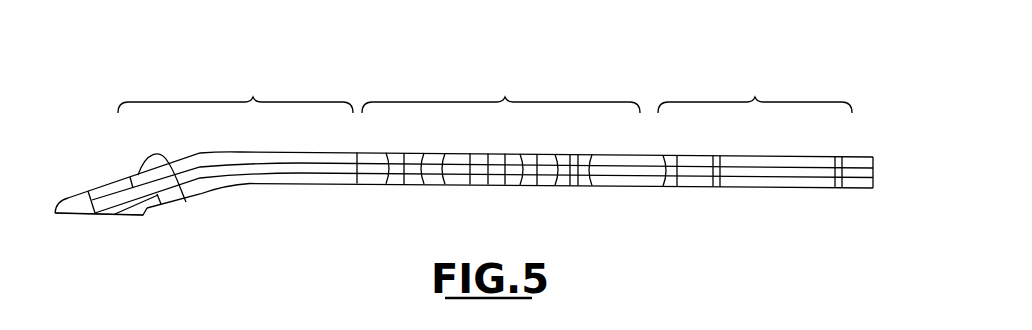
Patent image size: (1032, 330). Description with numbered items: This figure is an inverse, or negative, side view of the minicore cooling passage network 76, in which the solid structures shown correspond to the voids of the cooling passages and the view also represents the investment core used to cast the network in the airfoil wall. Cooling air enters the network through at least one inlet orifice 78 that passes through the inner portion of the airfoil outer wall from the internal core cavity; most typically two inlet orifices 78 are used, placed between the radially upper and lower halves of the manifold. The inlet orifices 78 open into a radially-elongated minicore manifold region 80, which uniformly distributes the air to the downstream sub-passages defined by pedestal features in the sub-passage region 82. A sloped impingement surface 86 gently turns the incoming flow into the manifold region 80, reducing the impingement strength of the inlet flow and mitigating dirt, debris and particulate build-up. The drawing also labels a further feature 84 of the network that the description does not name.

The minicore cooling passage network 76 is at (229, 150).
The inlet orifice 78 is at (80, 217).
The minicore manifold region 80 is at (253, 97).
The sub-passage region 82 is at (505, 97).
The proximal section 84 is at (755, 97).
The sloped impingement surface 86 is at (186, 202).